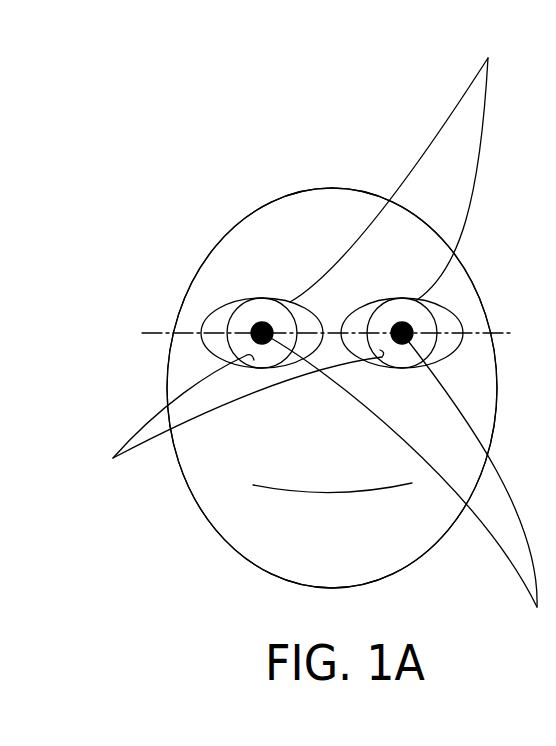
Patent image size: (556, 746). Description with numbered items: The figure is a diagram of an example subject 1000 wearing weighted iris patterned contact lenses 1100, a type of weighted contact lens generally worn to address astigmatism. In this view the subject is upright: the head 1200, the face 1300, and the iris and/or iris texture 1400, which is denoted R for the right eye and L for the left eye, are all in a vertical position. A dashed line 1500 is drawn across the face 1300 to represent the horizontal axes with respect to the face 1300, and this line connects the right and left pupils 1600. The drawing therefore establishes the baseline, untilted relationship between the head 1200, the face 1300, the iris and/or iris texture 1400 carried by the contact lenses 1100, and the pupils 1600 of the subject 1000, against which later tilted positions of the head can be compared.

The subject 1000 is at (357, 165).
The weighted iris patterned contact lenses 1100 is at (507, 45).
The head 1200 is at (263, 203).
The face 1300 is at (220, 283).
The iris and/or iris texture 1400 is at (132, 493).
The dashed line 1500 is at (100, 343).
The right and left pupils 1600 is at (547, 648).